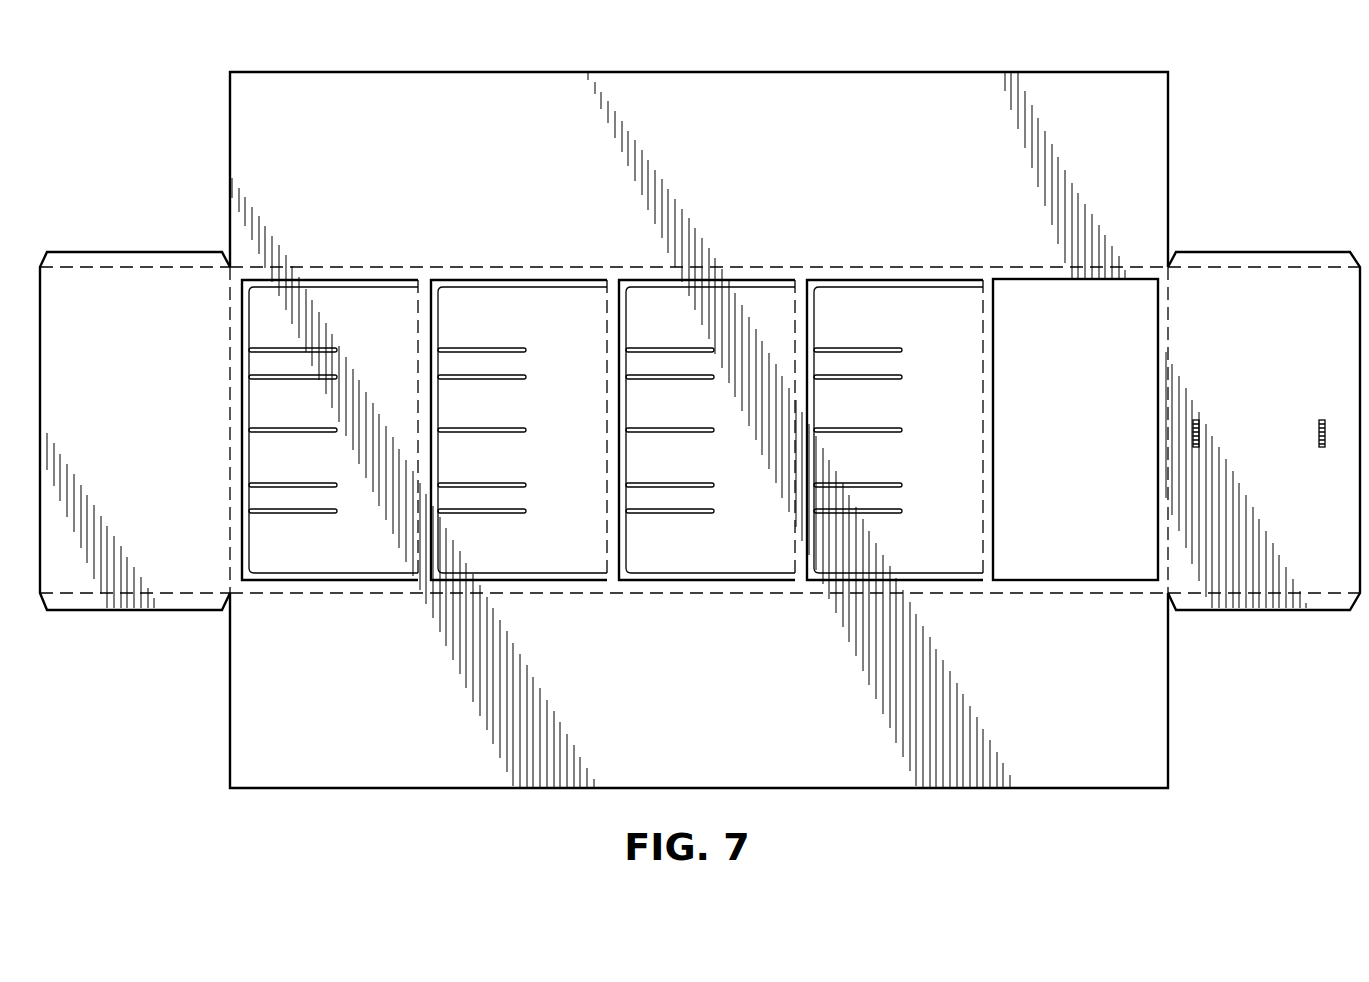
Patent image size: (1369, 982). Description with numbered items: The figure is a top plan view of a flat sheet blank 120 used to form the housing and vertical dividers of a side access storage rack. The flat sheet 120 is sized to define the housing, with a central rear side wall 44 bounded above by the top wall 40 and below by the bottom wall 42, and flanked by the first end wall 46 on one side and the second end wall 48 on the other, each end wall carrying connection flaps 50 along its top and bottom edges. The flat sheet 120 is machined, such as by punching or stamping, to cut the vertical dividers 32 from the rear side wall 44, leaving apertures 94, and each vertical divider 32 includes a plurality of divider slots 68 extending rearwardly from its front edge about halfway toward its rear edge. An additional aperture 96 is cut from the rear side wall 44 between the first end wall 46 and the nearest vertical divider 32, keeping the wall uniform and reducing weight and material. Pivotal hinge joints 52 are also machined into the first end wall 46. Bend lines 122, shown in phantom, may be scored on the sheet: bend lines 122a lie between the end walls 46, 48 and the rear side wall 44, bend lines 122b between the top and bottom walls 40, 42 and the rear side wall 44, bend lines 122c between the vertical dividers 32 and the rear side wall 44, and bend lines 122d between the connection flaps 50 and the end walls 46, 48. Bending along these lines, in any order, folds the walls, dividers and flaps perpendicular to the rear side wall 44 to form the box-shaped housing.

The flat sheet blank 120 is at (226, 66).
The top wall 40 is at (505, 186).
The bottom wall 42 is at (722, 741).
The rear side wall 44 is at (543, 266).
The first end wall 46 is at (1318, 364).
The second end wall 48 is at (137, 466).
The connection flaps 50 is at (78, 251).
The pivotal hinge joints 52 is at (1196, 420).
The divider slots 68 is at (271, 381).
The vertical dividers 32 is at (383, 556).
The apertures 94 is at (333, 283).
The additional aperture 96 is at (1030, 283).
The bend lines 122 is at (362, 262).
The bend lines 122a is at (230, 346).
The bend lines 122b is at (386, 266).
The bend lines 122c is at (418, 323).
The bend lines 122d is at (150, 268).